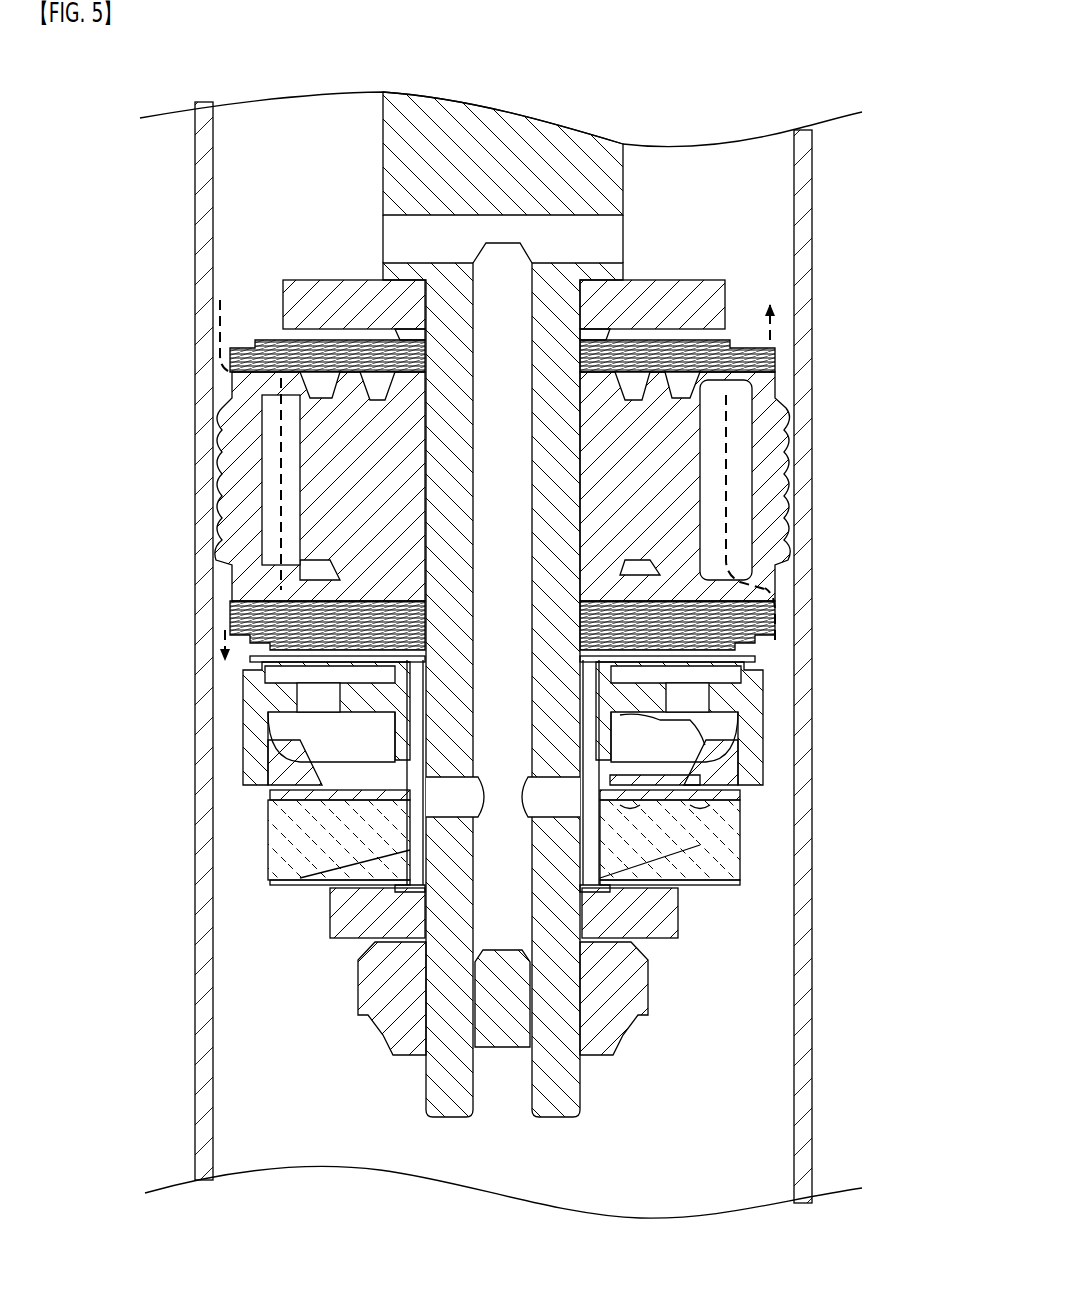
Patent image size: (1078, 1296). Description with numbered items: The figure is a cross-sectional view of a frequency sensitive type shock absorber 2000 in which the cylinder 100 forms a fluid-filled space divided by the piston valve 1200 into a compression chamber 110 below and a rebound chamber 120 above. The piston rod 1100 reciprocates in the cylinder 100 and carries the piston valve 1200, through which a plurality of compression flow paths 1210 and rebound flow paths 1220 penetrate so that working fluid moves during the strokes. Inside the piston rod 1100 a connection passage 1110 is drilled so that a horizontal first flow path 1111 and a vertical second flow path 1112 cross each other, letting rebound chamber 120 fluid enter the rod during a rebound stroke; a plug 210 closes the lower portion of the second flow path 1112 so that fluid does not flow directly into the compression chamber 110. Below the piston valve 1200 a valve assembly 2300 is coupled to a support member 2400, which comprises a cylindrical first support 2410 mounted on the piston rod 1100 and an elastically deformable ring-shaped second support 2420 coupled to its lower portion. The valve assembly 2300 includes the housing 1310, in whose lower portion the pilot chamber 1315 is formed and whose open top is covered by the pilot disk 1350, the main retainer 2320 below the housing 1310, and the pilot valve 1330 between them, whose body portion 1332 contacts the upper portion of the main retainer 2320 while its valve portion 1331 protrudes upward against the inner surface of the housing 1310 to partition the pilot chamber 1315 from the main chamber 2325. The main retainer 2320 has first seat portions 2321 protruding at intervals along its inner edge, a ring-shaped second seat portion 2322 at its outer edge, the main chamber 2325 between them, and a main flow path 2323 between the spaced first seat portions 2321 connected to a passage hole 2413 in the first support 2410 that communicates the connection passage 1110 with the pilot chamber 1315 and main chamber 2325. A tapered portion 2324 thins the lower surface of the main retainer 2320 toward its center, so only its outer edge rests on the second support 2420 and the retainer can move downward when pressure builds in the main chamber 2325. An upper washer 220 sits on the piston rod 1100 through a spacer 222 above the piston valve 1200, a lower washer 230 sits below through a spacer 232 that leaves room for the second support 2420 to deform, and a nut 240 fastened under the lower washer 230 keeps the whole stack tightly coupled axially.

The cylinder 100 is at (805, 192).
The compression chamber 110 is at (312, 1065).
The rebound chamber 120 is at (298, 188).
The plug 210 is at (505, 1048).
The upper washer 220 is at (283, 297).
The spacer 222 is at (387, 333).
The lower washer 230 is at (335, 920).
The spacer 232 is at (395, 888).
The nut 240 is at (368, 978).
The piston rod 1100 is at (375, 122).
The connection passage 1110 is at (576, 645).
The first flow path 1111 is at (572, 218).
The second flow path 1112 is at (522, 300).
The piston valve 1200 is at (501, 480).
The compression flow path 1210 is at (738, 472).
The rebound flow path 1220 is at (272, 506).
The housing 1310 is at (755, 690).
The pilot chamber 1315 is at (686, 712).
The pilot valve 1330 is at (782, 769).
The valve portion 1331 is at (716, 757).
The body portion 1332 is at (683, 780).
The pilot disk 1350 is at (757, 660).
The frequency sensitive type shock absorber 2000 is at (157, 188).
The valve assembly 2300 is at (235, 687).
The main retainer 2320 is at (777, 869).
The first seat portion 2321 is at (740, 845).
The second seat portion 2322 is at (740, 810).
The main flow path 2323 is at (715, 860).
The tapered portion 2324 is at (680, 893).
The main chamber 2325 is at (700, 822).
The support member 2400 is at (227, 804).
The first support 2410 is at (398, 735).
The passage hole 2413 is at (410, 800).
The second support 2420 is at (300, 880).